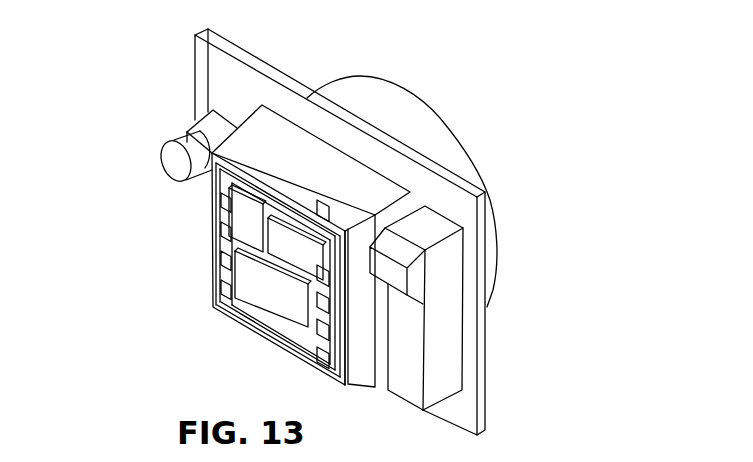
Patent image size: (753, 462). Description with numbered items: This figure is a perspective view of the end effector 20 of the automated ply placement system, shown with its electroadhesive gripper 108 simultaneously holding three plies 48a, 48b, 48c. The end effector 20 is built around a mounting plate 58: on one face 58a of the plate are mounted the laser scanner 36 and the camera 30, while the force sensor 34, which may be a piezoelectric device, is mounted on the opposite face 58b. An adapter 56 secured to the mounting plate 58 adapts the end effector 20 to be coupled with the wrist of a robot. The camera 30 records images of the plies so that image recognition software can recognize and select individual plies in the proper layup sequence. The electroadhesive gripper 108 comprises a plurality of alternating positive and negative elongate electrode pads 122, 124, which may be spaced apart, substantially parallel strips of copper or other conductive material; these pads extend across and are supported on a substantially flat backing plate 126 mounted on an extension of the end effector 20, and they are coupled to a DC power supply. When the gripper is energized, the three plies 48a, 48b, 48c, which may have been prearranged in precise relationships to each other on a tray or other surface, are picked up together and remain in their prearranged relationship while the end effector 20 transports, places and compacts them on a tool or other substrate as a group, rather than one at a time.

The end effector 20 is at (545, 116).
The camera 30 is at (160, 140).
The force sensor 34 is at (350, 133).
The laser scanner 36 is at (442, 322).
The ply 48a is at (243, 213).
The ply 48b is at (278, 243).
The ply 48c is at (272, 293).
The adapter 56 is at (436, 109).
The mounting plate 58 is at (213, 63).
The face of mounting plate 58a is at (209, 95).
The opposite face of mounting plate 58b is at (494, 343).
The electroadhesive gripper 108 is at (203, 300).
The positive electrode pads 122 is at (267, 320).
The negative electrode pads 124 is at (268, 203).
The backing plate 126 is at (342, 323).